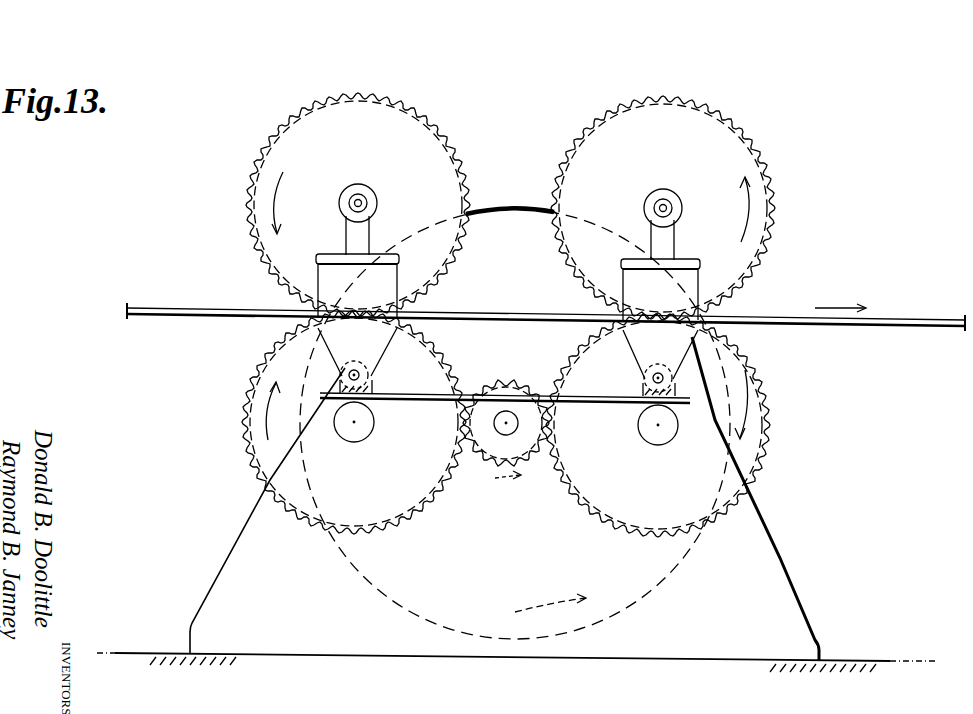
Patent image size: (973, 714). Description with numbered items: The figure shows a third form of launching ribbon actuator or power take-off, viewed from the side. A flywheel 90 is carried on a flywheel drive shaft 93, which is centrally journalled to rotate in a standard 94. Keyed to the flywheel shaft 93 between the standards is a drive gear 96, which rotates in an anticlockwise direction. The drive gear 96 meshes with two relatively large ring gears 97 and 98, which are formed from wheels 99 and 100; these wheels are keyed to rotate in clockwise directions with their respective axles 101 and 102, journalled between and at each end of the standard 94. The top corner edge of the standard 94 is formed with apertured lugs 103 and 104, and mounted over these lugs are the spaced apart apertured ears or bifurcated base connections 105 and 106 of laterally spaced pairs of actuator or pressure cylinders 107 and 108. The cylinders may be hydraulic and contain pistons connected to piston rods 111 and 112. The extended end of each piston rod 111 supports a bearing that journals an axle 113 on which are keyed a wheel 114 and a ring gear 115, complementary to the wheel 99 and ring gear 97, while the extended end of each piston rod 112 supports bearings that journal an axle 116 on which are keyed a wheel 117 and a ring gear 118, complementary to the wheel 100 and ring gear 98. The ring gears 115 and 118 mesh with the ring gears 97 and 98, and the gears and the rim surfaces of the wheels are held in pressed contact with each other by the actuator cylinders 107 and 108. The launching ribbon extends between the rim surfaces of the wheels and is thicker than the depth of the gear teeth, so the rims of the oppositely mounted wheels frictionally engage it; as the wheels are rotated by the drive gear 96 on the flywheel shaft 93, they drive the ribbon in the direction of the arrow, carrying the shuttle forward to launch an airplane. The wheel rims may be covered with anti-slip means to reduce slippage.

The flywheel 90 is at (496, 225).
The flywheel drive shaft 93 is at (508, 414).
The standard 94 is at (753, 543).
The drive gear 96 is at (487, 453).
The ring gear 97 is at (242, 432).
The ring gear 98 is at (768, 462).
The wheel 99 is at (356, 528).
The wheel 100 is at (612, 500).
The axle 101 is at (360, 437).
The axle 102 is at (662, 439).
The apertured lug 103 is at (338, 378).
The apertured lug 104 is at (677, 391).
The bifurcated base connection 105 is at (372, 366).
The bifurcated base connection 106 is at (684, 361).
The actuator cylinder 107 is at (387, 287).
The actuator cylinder 108 is at (692, 288).
The piston rod 111 is at (368, 227).
The piston rod 112 is at (670, 230).
The axle 113 is at (355, 203).
The wheel 114 is at (245, 171).
The ring gear 115 is at (363, 93).
The axle 116 is at (673, 197).
The wheel 117 is at (757, 157).
The ring gear 118 is at (655, 97).